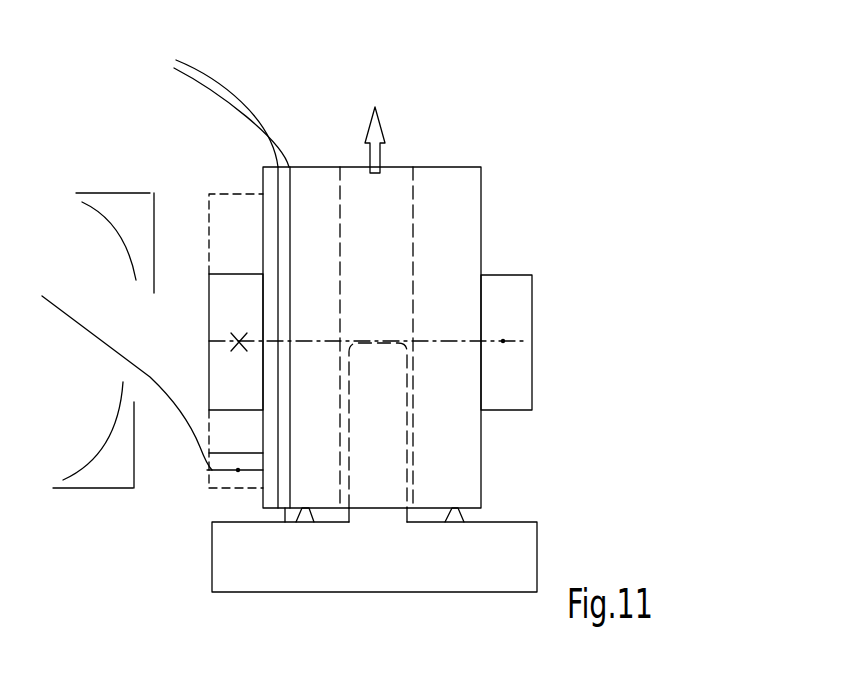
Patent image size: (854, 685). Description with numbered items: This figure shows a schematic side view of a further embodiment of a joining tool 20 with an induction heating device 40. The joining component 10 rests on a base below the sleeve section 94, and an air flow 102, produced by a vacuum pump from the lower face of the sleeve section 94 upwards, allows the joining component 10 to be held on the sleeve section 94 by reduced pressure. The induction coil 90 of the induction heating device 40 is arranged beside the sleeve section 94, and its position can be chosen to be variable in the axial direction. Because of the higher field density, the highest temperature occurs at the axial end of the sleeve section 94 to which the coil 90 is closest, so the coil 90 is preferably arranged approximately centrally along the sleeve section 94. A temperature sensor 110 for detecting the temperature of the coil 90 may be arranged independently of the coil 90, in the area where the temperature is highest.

The joining component 10 is at (408, 570).
The joining tool 20 is at (618, 128).
The induction heating device 40 is at (485, 223).
The induction coil 90 is at (512, 314).
The sleeve section 94 is at (448, 180).
The air flow 102 is at (380, 117).
The temperature sensor 110 is at (238, 471).